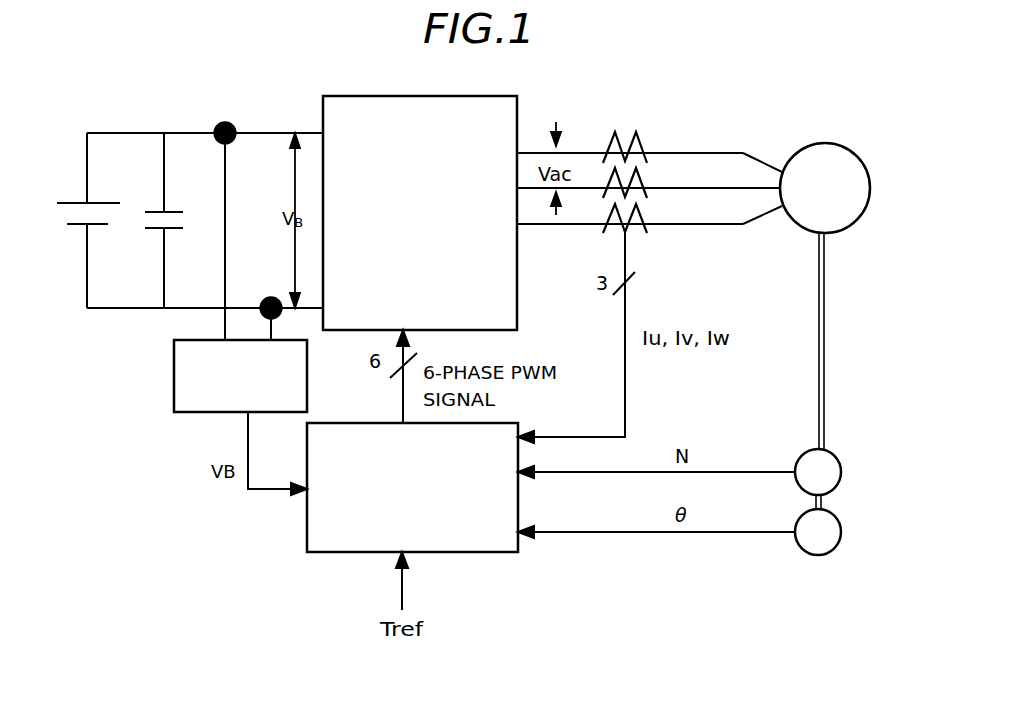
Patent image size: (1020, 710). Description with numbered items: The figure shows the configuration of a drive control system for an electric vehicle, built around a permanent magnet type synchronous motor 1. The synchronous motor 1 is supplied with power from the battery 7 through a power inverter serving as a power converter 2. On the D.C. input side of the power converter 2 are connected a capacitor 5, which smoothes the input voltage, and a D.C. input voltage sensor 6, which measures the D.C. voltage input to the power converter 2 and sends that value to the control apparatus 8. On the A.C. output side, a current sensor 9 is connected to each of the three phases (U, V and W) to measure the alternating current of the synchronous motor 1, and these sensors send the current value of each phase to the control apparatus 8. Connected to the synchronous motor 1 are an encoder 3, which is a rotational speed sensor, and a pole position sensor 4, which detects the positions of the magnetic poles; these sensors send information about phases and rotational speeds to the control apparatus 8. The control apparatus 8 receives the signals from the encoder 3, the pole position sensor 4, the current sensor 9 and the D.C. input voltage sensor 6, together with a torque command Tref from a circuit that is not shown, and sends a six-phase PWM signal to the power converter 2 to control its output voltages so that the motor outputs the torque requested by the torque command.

The synchronous motor 1 is at (826, 158).
The power converter 2 is at (460, 120).
The encoder 3 is at (836, 461).
The pole position sensor 4 is at (808, 554).
The capacitor 5 is at (146, 231).
The D.C. input voltage sensor 6 is at (180, 410).
The battery 7 is at (120, 200).
The control apparatus 8 is at (312, 538).
The current sensor 9 is at (640, 140).